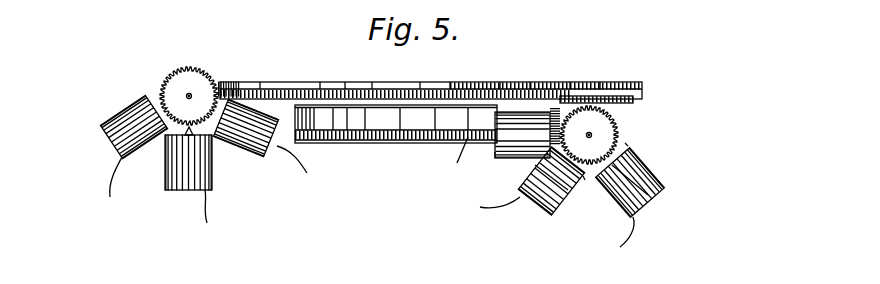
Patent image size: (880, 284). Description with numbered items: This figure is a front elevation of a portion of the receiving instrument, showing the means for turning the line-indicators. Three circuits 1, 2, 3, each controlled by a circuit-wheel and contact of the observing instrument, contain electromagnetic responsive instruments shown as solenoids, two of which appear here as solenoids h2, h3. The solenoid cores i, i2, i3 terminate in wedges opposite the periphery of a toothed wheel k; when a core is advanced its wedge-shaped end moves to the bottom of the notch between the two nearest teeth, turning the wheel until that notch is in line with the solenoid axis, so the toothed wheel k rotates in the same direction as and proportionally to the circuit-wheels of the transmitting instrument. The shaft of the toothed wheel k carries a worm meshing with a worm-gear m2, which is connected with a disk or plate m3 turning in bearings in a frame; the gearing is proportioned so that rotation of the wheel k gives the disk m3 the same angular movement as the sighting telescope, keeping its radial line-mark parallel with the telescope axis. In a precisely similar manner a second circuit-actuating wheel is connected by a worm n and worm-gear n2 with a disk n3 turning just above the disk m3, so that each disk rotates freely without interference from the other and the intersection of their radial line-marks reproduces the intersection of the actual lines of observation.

The circuit 1 is at (103, 123).
The circuit 2 is at (169, 190).
The circuit 3 is at (260, 158).
The worm n is at (488, 126).
The worm-gear n2 is at (196, 73).
The disk n3 is at (280, 82).
The worm-gear m2 is at (437, 141).
The disk or plate m3 is at (633, 101).
The toothed wheel k is at (616, 136).
The solenoid core i is at (530, 161).
The solenoid core i2 is at (584, 183).
The solenoid core i3 is at (627, 144).
The solenoid h2 is at (551, 179).
The solenoid h3 is at (630, 180).